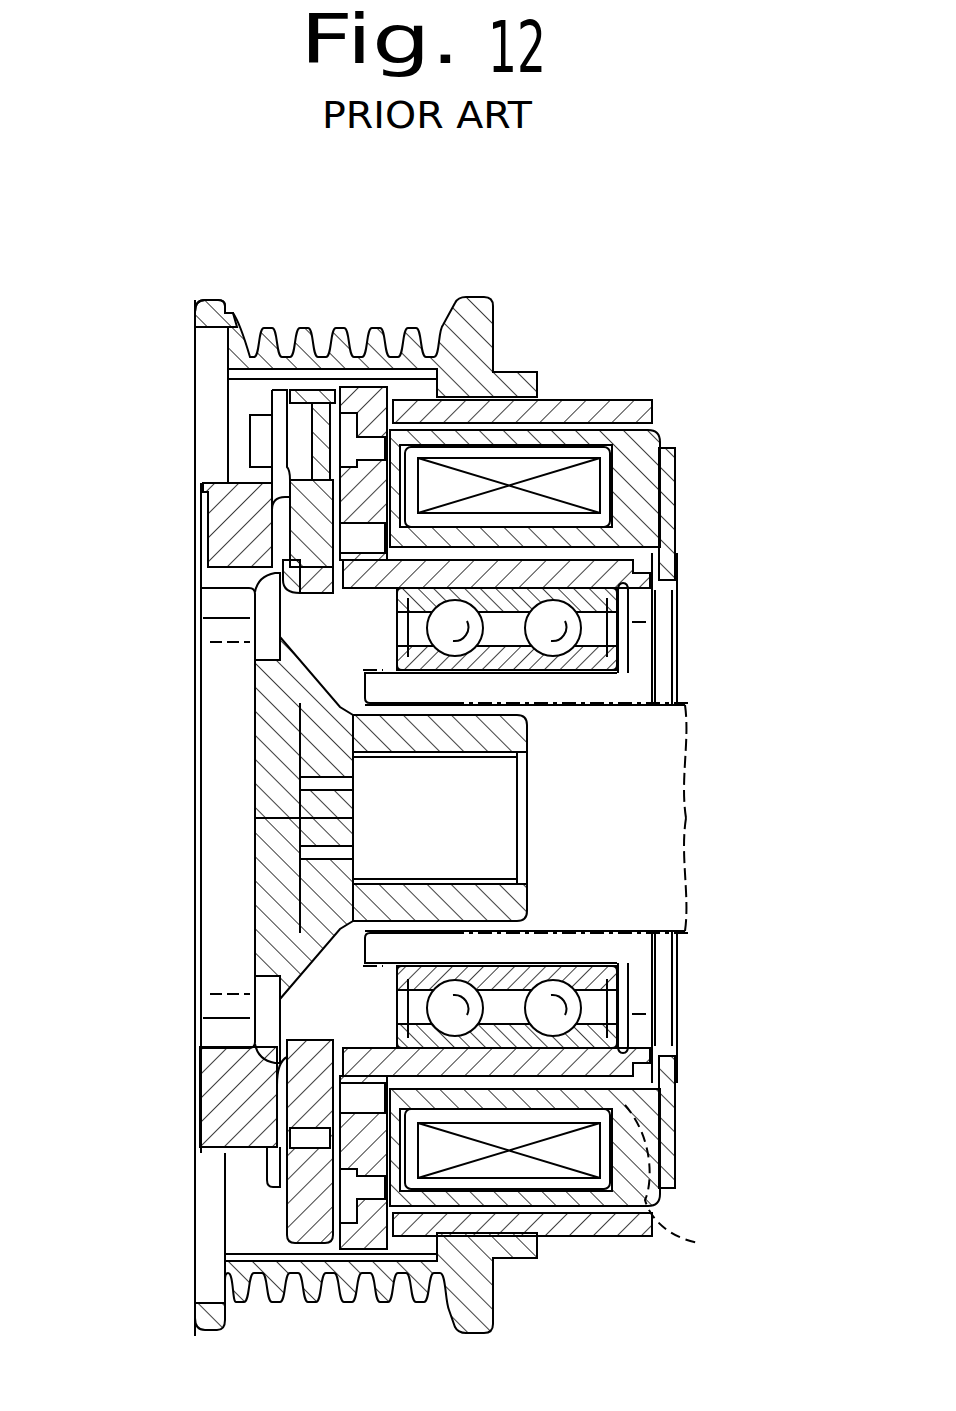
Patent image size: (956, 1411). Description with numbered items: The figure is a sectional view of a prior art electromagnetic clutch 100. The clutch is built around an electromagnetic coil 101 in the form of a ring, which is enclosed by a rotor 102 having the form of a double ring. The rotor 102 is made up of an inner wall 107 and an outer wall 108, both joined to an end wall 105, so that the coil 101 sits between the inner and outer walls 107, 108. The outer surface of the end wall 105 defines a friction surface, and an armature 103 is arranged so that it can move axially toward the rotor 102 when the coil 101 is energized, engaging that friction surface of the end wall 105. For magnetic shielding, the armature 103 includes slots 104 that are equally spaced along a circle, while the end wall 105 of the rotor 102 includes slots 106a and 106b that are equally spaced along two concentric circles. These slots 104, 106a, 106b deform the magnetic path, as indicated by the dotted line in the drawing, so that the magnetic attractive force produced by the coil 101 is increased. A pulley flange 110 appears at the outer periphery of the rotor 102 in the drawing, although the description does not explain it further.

The electromagnetic clutch 100 is at (668, 410).
The electromagnetic coil 101 is at (583, 490).
The rotor 102 is at (372, 400).
The armature 103 is at (303, 395).
The slots 104 is at (277, 1135).
The end wall 105 is at (337, 1030).
The slots 106a is at (360, 535).
The slots 106b is at (363, 452).
The inner wall 107 is at (610, 573).
The outer wall 108 is at (582, 407).
The pulley flange 110 is at (210, 303).